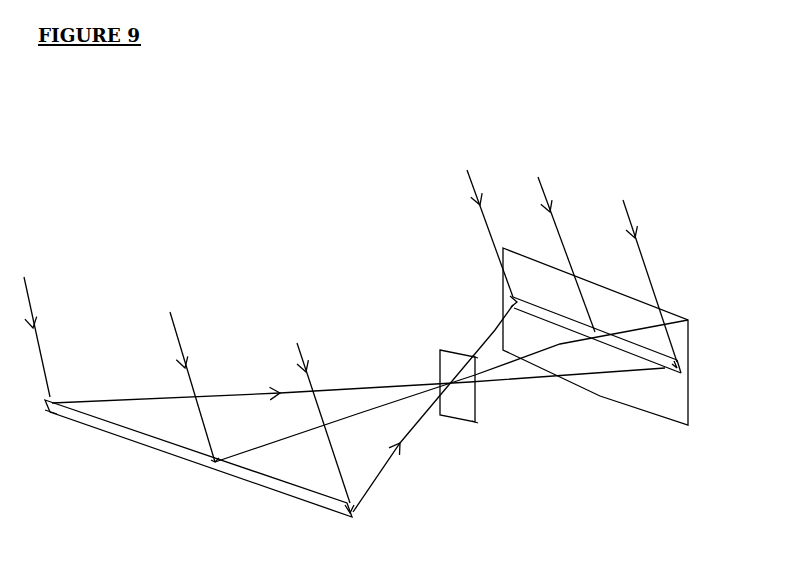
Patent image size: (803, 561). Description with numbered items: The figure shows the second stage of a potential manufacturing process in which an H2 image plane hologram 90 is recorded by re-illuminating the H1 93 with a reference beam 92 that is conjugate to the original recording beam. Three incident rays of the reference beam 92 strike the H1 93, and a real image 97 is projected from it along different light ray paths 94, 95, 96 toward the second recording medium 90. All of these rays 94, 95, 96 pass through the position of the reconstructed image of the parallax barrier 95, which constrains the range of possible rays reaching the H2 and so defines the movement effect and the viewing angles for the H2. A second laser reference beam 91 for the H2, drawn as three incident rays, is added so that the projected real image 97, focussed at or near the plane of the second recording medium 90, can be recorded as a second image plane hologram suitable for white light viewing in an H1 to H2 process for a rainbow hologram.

The H2 image plane hologram 90 is at (691, 418).
The second laser reference beam 91 is at (572, 254).
The reference beam 92 is at (187, 380).
The H1 93 is at (288, 497).
The light ray path 94 is at (433, 408).
The reconstructed image of the parallax barrier 95 is at (462, 425).
The light ray path 96 is at (358, 384).
The real image 97 is at (647, 341).